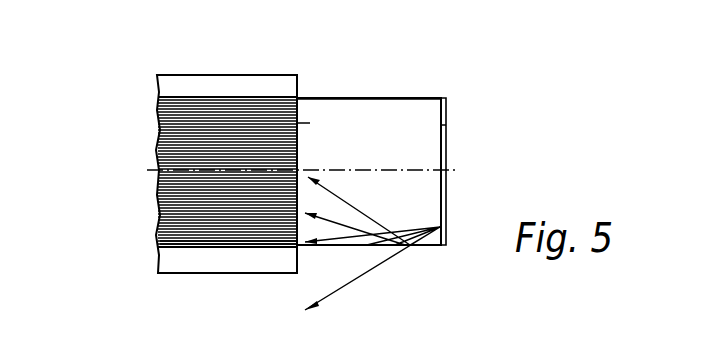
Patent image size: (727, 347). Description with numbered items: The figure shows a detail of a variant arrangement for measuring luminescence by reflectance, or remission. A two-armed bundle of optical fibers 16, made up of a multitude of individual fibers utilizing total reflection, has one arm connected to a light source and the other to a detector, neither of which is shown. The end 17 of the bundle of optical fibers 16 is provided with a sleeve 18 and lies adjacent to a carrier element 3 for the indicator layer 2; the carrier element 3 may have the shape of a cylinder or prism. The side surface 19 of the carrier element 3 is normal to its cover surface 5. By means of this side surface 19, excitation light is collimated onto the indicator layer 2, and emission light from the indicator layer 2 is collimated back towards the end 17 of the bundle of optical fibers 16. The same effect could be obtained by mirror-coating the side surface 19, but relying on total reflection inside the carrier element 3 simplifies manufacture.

The indicator layer 2 is at (446, 122).
The carrier element 3 is at (408, 117).
The cover surface 5 is at (310, 121).
The bundle of optical fibers 16 is at (160, 122).
The end of the bundle of optical fibers 17 is at (285, 227).
The sleeve 18 is at (245, 87).
The side surface 19 is at (370, 98).